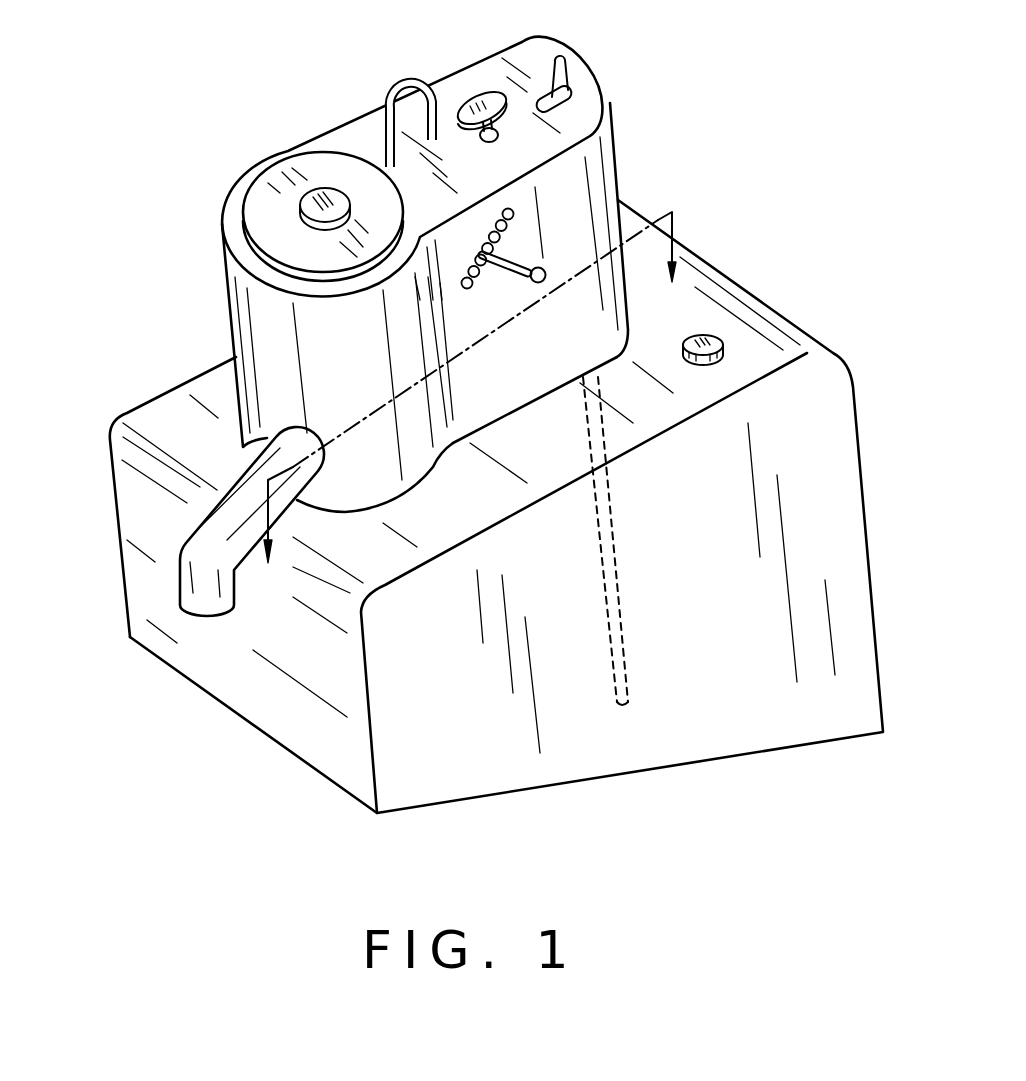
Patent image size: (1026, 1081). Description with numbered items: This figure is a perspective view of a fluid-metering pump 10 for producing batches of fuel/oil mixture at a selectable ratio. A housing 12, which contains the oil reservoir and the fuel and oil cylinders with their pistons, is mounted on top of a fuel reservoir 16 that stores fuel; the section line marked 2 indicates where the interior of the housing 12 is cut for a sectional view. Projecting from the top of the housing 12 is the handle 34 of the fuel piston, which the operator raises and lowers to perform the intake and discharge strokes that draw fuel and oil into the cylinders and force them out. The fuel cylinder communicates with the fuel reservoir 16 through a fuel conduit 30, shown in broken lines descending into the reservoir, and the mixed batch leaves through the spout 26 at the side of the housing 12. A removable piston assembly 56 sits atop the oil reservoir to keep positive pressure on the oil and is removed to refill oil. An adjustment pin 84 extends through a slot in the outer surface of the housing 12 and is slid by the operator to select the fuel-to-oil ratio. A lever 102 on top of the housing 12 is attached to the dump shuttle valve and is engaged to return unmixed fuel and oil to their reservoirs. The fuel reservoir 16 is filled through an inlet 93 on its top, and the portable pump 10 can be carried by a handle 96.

The fluid-metering pump 10 is at (219, 149).
The housing 12 is at (263, 340).
The fuel reservoir 16 is at (838, 478).
The spout 26 is at (203, 613).
The fuel conduit 30 is at (625, 703).
The handle 34 is at (487, 102).
The piston assembly 56 is at (267, 238).
The adjustment pin 84 is at (522, 265).
The inlet 93 is at (708, 340).
The handle 96 is at (396, 95).
The lever 102 is at (557, 55).
The section line 2- 2 is at (471, 400).